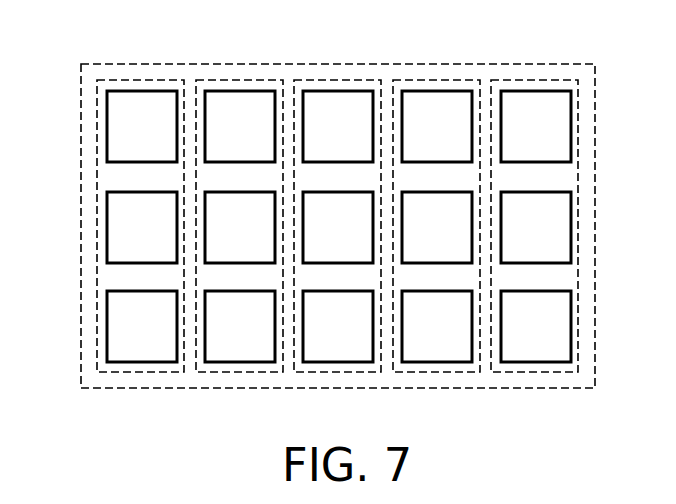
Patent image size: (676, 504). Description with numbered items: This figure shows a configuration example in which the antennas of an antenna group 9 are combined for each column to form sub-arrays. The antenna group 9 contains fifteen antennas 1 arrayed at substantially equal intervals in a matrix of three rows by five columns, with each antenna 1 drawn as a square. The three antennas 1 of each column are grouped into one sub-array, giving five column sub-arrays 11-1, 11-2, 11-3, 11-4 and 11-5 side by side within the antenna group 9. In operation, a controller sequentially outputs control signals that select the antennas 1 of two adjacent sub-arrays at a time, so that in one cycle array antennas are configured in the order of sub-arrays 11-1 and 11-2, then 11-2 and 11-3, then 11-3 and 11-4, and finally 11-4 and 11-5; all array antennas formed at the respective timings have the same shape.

The antenna 1 is at (107, 130).
The antenna group 9 is at (81, 254).
The sub-array 11-1 is at (148, 80).
The sub-array 11-2 is at (247, 80).
The sub-array 11-3 is at (346, 80).
The sub-array 11-4 is at (445, 80).
The sub-array 11-5 is at (543, 80).